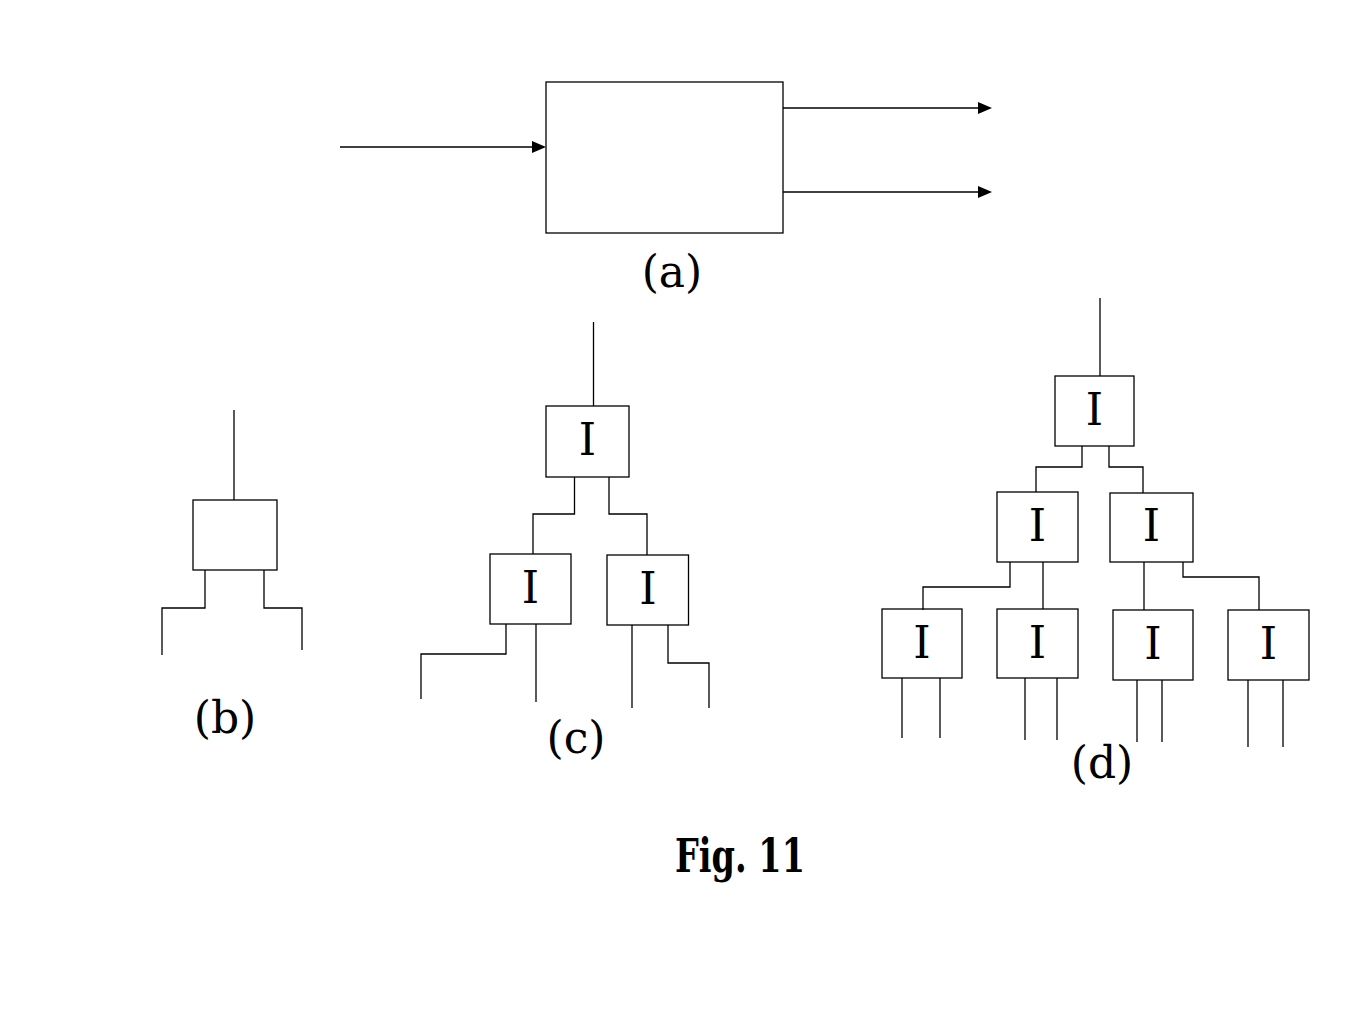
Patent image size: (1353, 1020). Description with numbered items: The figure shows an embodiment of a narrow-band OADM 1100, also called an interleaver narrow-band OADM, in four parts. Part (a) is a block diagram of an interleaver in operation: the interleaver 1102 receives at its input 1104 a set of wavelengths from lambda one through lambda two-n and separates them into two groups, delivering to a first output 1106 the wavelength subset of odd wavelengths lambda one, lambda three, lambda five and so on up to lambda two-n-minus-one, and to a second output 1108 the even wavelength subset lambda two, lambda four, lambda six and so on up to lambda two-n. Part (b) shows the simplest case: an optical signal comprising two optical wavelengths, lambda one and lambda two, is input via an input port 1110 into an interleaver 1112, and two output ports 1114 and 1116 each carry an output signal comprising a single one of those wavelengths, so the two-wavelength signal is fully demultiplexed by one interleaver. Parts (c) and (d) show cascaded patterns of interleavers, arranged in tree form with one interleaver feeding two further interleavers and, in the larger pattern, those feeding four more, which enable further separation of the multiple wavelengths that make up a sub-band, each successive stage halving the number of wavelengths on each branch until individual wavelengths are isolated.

The narrow-band OADM 1100 is at (232, 143).
The interleaver 1102 is at (558, 80).
The input 1104 is at (367, 145).
The first output 1106 is at (793, 106).
The second output 1108 is at (787, 193).
The input port 1110 is at (233, 457).
The interleaver 1112 is at (193, 525).
The output port 1114 is at (173, 608).
The output port 1116 is at (298, 607).